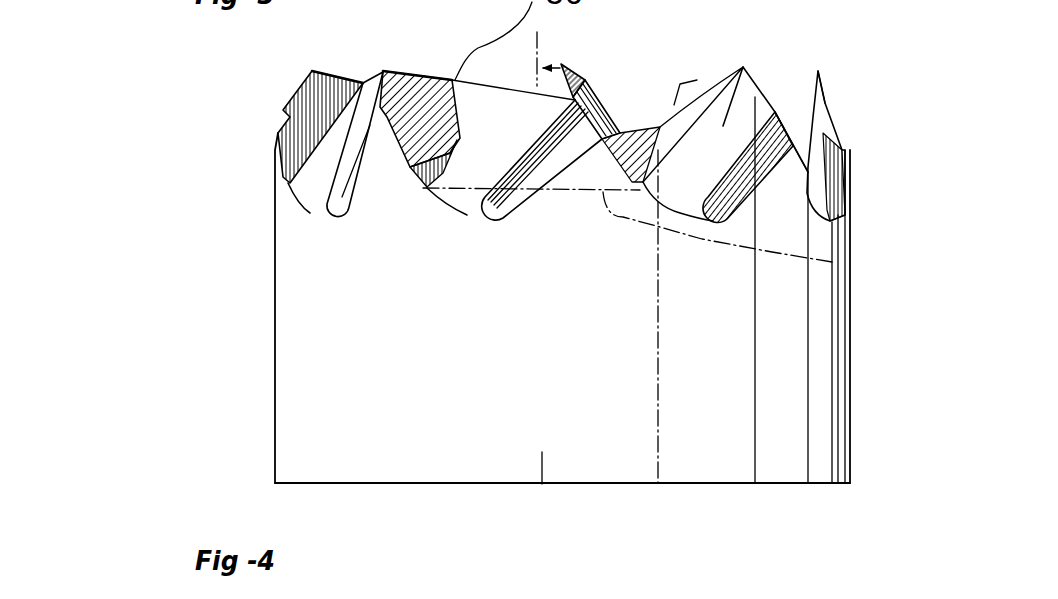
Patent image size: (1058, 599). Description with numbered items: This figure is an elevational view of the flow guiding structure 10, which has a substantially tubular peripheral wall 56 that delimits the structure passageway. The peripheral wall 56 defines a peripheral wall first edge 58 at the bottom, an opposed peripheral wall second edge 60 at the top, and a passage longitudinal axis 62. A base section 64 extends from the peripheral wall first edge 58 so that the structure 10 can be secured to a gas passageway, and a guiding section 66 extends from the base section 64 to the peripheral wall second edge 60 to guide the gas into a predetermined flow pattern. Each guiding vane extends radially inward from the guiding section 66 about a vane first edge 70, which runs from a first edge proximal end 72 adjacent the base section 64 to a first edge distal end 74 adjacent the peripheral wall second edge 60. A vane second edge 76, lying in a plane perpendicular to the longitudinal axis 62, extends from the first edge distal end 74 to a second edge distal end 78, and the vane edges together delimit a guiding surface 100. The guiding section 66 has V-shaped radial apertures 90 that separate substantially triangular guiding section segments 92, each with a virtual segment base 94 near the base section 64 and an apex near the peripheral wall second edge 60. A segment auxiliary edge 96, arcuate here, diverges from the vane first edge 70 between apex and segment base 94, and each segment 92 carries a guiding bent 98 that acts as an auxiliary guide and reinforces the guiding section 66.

The guiding structure 10 is at (266, 62).
The peripheral wall 56 is at (167, 471).
The peripheral wall first edge 58 is at (727, 485).
The peripheral wall second edge 60 is at (820, 68).
The passage longitudinal axis 62 is at (583, 484).
The base section 64 is at (249, 196).
The guiding section 66 is at (248, 66).
The vane first edge 70 is at (336, 70).
The first edge proximal end 72 is at (644, 178).
The first edge distal end 74 is at (376, 64).
The vane second edge 76 is at (393, 71).
The second edge distal end 78 is at (452, 81).
The radial apertures 90 is at (790, 118).
The guiding section segments 92 is at (748, 80).
The segment base 94 is at (834, 263).
The segment auxiliary edge 96 is at (584, 77).
The guiding bent 98 is at (750, 178).
The guiding surface 100 is at (793, 97).